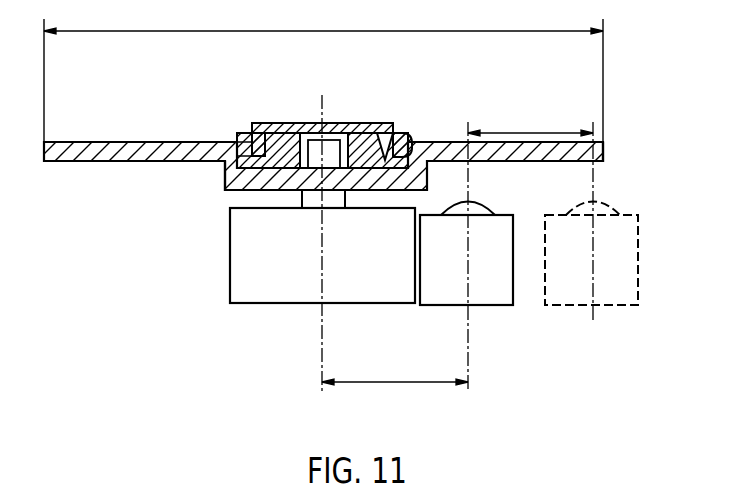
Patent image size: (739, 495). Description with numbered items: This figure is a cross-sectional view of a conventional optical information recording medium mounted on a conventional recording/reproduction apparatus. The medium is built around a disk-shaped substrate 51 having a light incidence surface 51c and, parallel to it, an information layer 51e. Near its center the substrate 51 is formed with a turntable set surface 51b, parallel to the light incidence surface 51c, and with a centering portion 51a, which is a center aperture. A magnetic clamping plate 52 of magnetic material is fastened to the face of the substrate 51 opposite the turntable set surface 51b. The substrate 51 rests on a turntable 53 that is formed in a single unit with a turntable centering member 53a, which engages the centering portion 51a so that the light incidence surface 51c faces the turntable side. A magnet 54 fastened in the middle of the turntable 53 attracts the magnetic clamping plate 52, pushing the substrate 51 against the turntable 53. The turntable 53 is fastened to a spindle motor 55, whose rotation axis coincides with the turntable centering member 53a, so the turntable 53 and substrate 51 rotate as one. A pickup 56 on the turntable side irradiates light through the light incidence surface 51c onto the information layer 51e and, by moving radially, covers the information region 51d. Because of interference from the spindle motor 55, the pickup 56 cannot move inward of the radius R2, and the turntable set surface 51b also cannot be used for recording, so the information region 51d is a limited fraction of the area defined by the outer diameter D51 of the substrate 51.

The substrate 51 is at (445, 142).
The centering portion 51a is at (282, 124).
The turntable set surface 51b is at (218, 190).
The light incidence surface 51c is at (603, 166).
The information region 51d is at (530, 249).
The information layer 51e is at (112, 142).
The magnetic clamping plate 52 is at (398, 128).
The turntable 53 is at (238, 192).
The turntable centering member 53a is at (372, 124).
The magnet 54 is at (338, 124).
The spindle motor 55 is at (258, 297).
The pickup 56 is at (495, 297).
The outer diameter of the substrate D51 is at (323, 71).
The radius R2 is at (395, 368).